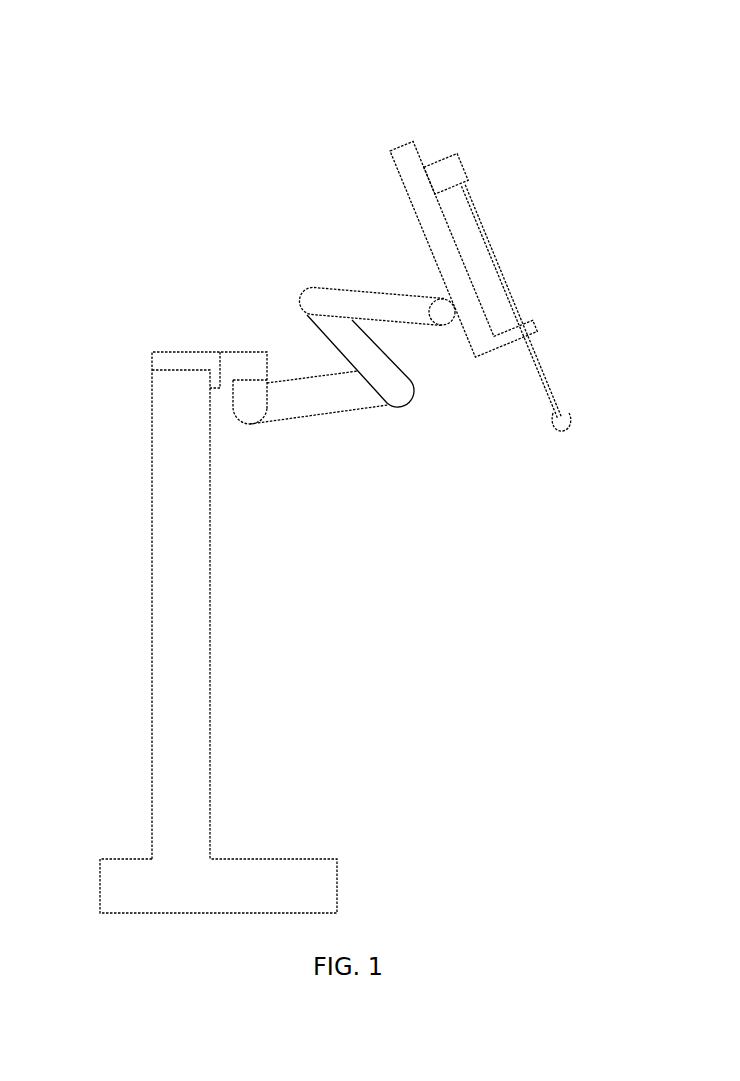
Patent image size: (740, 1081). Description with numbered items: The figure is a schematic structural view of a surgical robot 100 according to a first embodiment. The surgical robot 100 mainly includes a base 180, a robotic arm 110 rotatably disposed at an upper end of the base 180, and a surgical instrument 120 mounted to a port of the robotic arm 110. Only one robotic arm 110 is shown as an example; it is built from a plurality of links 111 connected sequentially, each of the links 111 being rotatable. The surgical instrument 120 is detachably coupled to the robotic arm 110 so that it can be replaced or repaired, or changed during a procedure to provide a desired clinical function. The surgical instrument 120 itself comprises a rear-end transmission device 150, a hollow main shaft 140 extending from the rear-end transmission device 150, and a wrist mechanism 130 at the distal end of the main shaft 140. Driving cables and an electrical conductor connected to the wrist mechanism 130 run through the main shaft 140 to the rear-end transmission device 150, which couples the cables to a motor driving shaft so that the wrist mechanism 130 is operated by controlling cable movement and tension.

The surgical robot 100 is at (79, 40).
The robotic arm 110 is at (344, 325).
The link 111 is at (412, 307).
The surgical instrument 120 is at (540, 271).
The wrist mechanism 130 is at (595, 402).
The main shaft 140 is at (518, 303).
The rear-end transmission device 150 is at (467, 165).
The base 180 is at (152, 560).